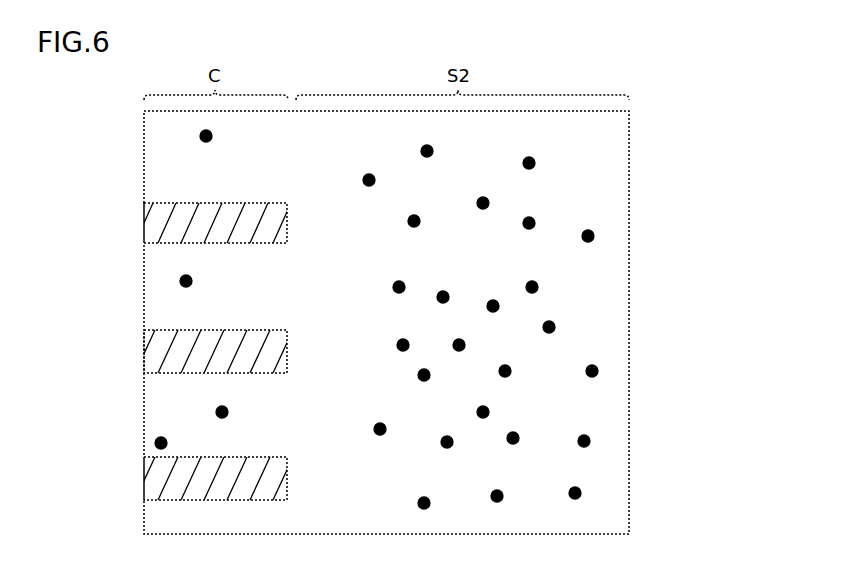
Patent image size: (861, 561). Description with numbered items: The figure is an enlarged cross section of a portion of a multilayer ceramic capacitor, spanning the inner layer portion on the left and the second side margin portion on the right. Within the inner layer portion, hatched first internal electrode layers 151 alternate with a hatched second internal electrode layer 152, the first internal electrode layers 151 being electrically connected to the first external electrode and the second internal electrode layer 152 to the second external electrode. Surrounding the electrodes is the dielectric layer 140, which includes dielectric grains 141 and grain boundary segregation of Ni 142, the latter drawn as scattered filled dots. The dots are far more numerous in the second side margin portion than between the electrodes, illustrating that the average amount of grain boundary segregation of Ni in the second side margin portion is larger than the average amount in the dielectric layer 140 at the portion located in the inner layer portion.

The dielectric layer 140 is at (440, 322).
The dielectric grain 141 is at (617, 268).
The grain boundary segregation of Ni 142 is at (595, 236).
The first internal electrode layer 151 is at (156, 225).
The second internal electrode layer 152 is at (156, 354).